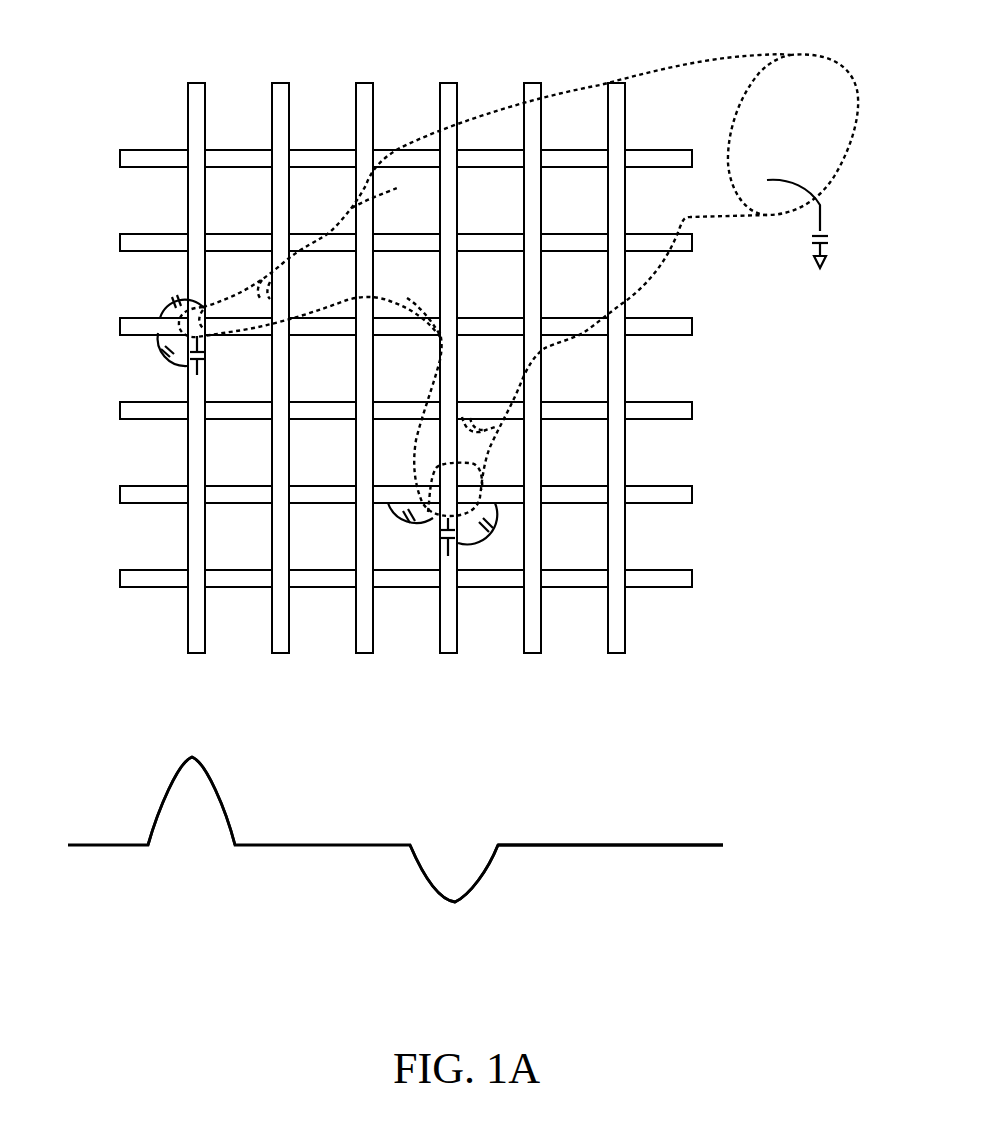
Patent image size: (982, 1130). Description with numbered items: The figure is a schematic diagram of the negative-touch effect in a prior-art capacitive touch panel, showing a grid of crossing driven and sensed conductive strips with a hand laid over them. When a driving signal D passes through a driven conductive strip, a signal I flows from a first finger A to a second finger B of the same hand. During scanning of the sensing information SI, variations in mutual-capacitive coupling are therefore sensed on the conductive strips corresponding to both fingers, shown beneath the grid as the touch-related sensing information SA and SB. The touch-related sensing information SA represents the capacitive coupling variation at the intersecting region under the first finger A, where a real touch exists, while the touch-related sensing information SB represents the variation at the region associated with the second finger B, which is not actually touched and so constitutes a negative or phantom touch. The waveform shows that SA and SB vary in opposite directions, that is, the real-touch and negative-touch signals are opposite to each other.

The first finger A is at (197, 335).
The second finger B is at (442, 529).
The signal I is at (210, 325).
The driving signal D is at (94, 327).
The touch-related sensing information SA is at (191, 801).
The touch-related sensing information SB is at (454, 868).
The sensing information SI is at (623, 845).